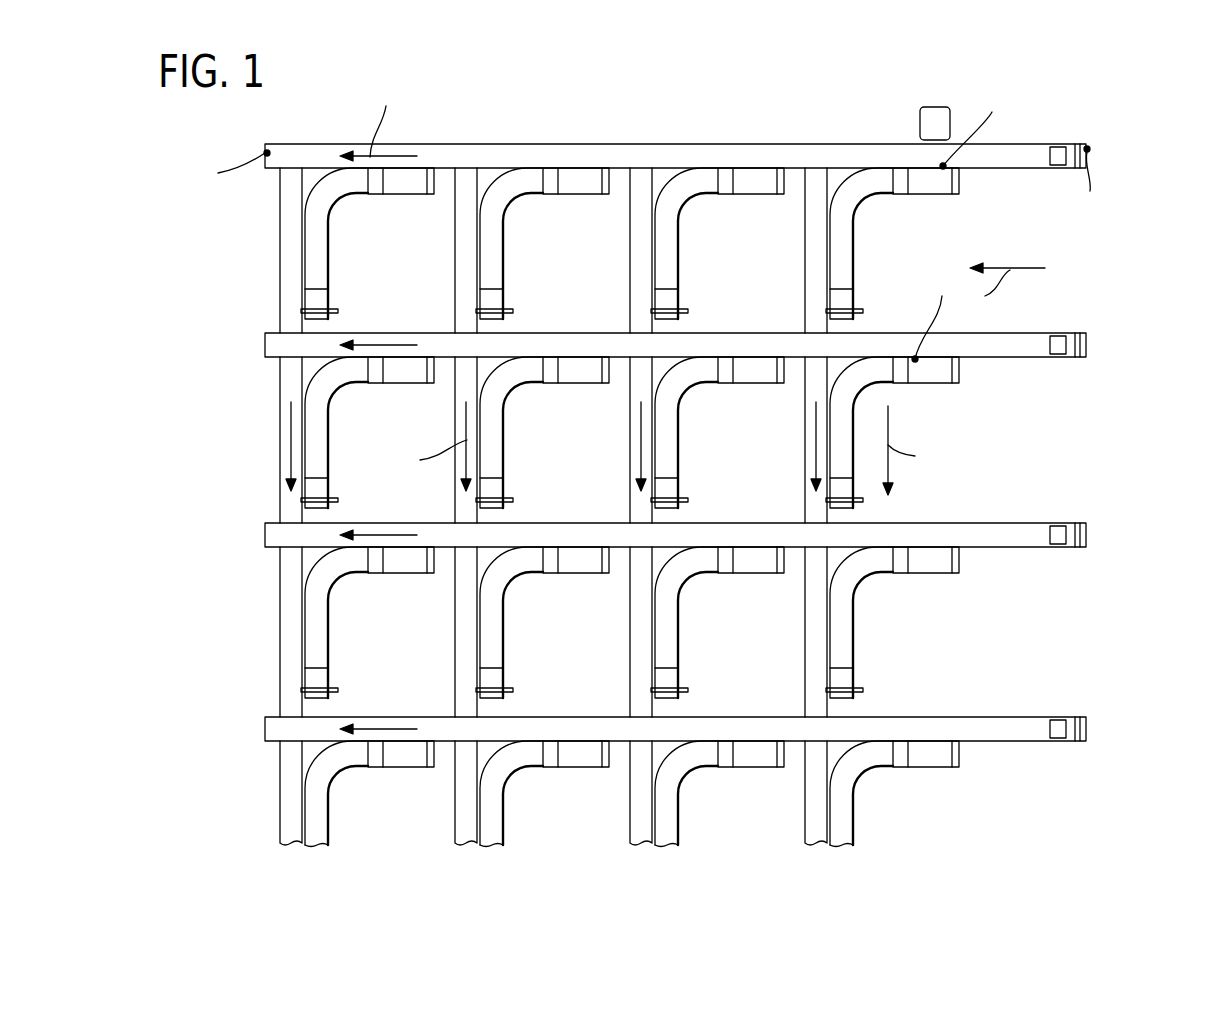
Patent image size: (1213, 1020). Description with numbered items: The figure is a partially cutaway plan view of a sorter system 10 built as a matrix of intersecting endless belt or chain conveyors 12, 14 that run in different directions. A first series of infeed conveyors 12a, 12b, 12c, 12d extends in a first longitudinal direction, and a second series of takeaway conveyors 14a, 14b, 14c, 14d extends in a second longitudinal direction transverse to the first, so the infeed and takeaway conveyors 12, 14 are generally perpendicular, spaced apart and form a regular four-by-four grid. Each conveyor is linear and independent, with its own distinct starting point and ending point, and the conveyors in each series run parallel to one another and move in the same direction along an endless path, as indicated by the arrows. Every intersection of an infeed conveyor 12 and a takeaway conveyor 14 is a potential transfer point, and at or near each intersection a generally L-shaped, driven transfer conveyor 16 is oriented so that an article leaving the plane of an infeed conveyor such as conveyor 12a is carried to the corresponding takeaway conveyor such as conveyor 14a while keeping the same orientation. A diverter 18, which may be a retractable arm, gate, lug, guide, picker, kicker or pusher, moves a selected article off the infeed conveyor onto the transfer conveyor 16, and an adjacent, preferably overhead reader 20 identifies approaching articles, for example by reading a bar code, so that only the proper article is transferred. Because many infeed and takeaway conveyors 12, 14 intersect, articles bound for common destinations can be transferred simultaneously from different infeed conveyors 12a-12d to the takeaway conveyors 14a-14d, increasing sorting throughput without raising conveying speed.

The sorter system 10 is at (1152, 108).
The infeed conveyors 12 is at (1093, 118).
The first infeed conveyor 12a is at (1028, 168).
The second infeed conveyor 12b is at (1012, 353).
The third infeed conveyor 12c is at (1022, 547).
The fourth infeed conveyor 12d is at (1035, 743).
The takeaway conveyors 14 is at (868, 842).
The first takeaway conveyor 14a is at (805, 237).
The second takeaway conveyor 14b is at (632, 255).
The third takeaway conveyor 14c is at (455, 258).
The fourth takeaway conveyor 14d is at (280, 253).
The transfer conveyor 16 is at (870, 197).
The diverter 18 is at (940, 108).
The reader 20 is at (1058, 146).